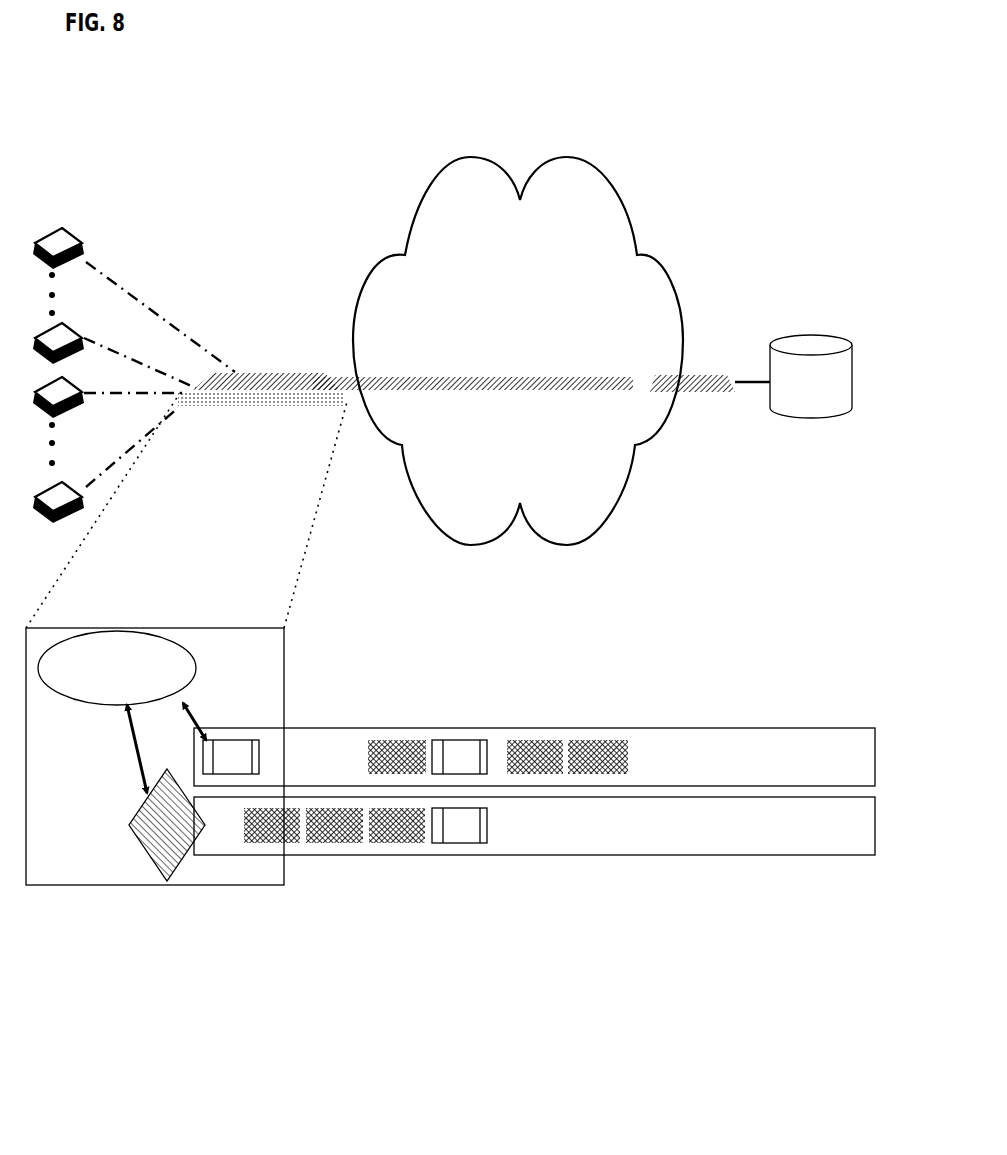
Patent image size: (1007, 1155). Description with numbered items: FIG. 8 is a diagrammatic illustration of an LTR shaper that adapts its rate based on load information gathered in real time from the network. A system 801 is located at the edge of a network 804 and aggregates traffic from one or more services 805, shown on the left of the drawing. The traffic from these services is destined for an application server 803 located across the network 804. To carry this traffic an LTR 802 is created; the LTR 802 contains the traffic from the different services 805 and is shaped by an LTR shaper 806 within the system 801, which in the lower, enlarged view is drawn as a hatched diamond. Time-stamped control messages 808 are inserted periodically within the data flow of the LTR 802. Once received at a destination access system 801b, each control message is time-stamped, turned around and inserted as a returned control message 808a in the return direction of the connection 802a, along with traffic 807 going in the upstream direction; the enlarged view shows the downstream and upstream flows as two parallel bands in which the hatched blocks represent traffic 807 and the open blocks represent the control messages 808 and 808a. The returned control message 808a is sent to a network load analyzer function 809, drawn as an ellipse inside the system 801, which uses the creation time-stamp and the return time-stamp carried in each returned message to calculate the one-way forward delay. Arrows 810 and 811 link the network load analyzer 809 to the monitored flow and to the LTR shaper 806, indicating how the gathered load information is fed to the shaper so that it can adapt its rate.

The system 801 is at (253, 373).
The destination access system 801b is at (722, 375).
The LTR 802 is at (438, 378).
The return direction of the connection 802a is at (795, 728).
The application server 803 is at (812, 345).
The network 804 is at (677, 287).
The services 805 is at (160, 437).
The LTR shaper 806 is at (168, 885).
The traffic 807 is at (597, 742).
The time-stamped control messages 808 is at (453, 827).
The returned control message 808a is at (230, 758).
The network load analyzer function 809 is at (83, 637).
The packet monitoring arrow 810 is at (203, 722).
The control communication arrow 811 is at (132, 763).